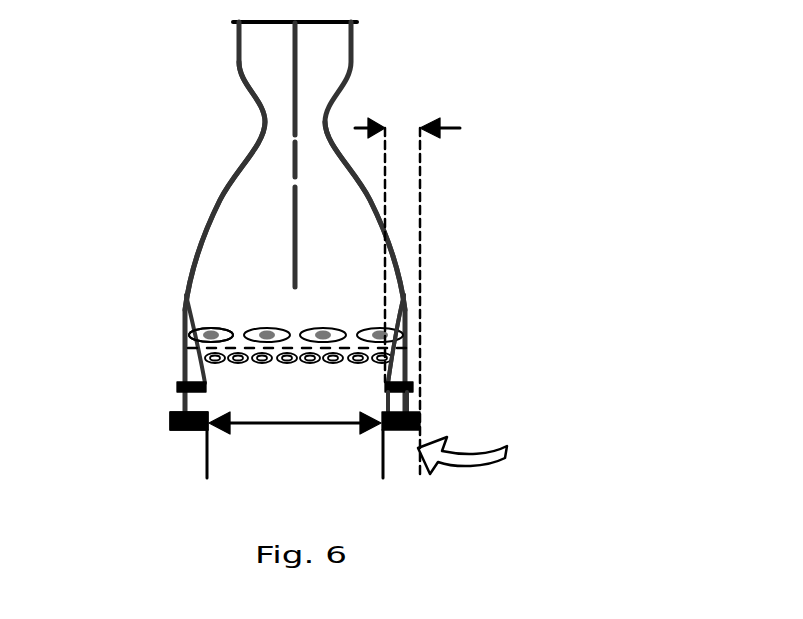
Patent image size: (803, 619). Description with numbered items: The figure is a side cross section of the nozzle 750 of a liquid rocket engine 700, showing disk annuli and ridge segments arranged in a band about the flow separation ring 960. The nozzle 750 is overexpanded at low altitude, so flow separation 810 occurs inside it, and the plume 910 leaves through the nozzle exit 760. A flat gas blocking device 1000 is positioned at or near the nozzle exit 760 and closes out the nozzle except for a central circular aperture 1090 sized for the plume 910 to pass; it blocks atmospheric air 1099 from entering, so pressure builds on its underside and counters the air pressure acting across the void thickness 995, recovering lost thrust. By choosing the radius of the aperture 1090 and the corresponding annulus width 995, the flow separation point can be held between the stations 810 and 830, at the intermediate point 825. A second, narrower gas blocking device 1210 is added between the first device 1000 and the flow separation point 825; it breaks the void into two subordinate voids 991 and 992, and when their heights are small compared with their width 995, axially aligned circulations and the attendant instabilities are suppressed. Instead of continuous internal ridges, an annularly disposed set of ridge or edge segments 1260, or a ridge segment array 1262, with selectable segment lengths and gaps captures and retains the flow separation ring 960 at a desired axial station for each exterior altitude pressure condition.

The liquid rocket engine 700 is at (236, 33).
The nozzle 750 is at (226, 178).
The flow separation point 810 is at (396, 253).
The flow separation point 825 is at (413, 343).
The flow separation ring 960 is at (358, 330).
The ridge or edge segments 1260 is at (198, 328).
The ridge segment array 1262 is at (255, 327).
The plume 910 is at (295, 352).
The second gas blocking device 1210 is at (178, 385).
The gas blocking device 1000 is at (172, 418).
The nozzle exit 760 is at (190, 432).
The subordinate void 991 is at (400, 373).
The subordinate void 992 is at (400, 401).
The flow separation point 830 is at (420, 420).
The void thickness 995 is at (403, 112).
The central circular aperture 1090 is at (303, 426).
The atmospheric air 1099 is at (480, 449).